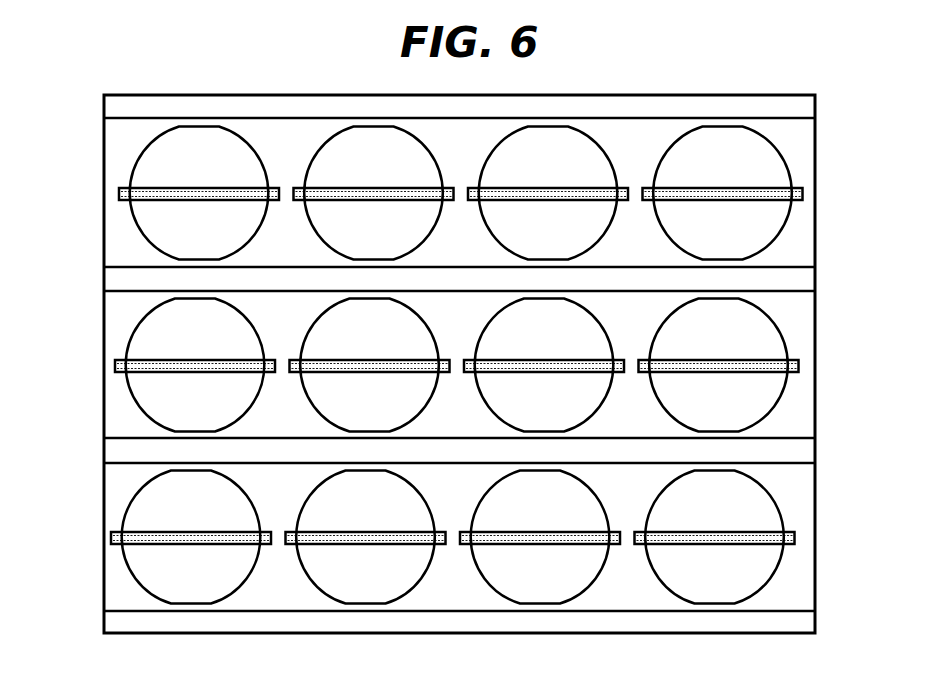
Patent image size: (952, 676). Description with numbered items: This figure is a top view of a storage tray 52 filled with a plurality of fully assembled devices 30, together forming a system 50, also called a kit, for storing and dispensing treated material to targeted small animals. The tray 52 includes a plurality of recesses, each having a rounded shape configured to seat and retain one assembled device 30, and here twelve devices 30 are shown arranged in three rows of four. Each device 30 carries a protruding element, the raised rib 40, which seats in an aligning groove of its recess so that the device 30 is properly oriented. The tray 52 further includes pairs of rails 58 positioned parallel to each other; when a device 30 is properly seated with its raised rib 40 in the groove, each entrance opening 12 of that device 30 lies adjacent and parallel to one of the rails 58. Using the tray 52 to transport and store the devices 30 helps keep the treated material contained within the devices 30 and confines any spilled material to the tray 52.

The entrance opening 12 is at (545, 262).
The device 30 is at (755, 258).
The raised rib 40 is at (785, 525).
The system 50 is at (79, 70).
The storage tray 52 is at (838, 166).
The rails 58 is at (113, 452).